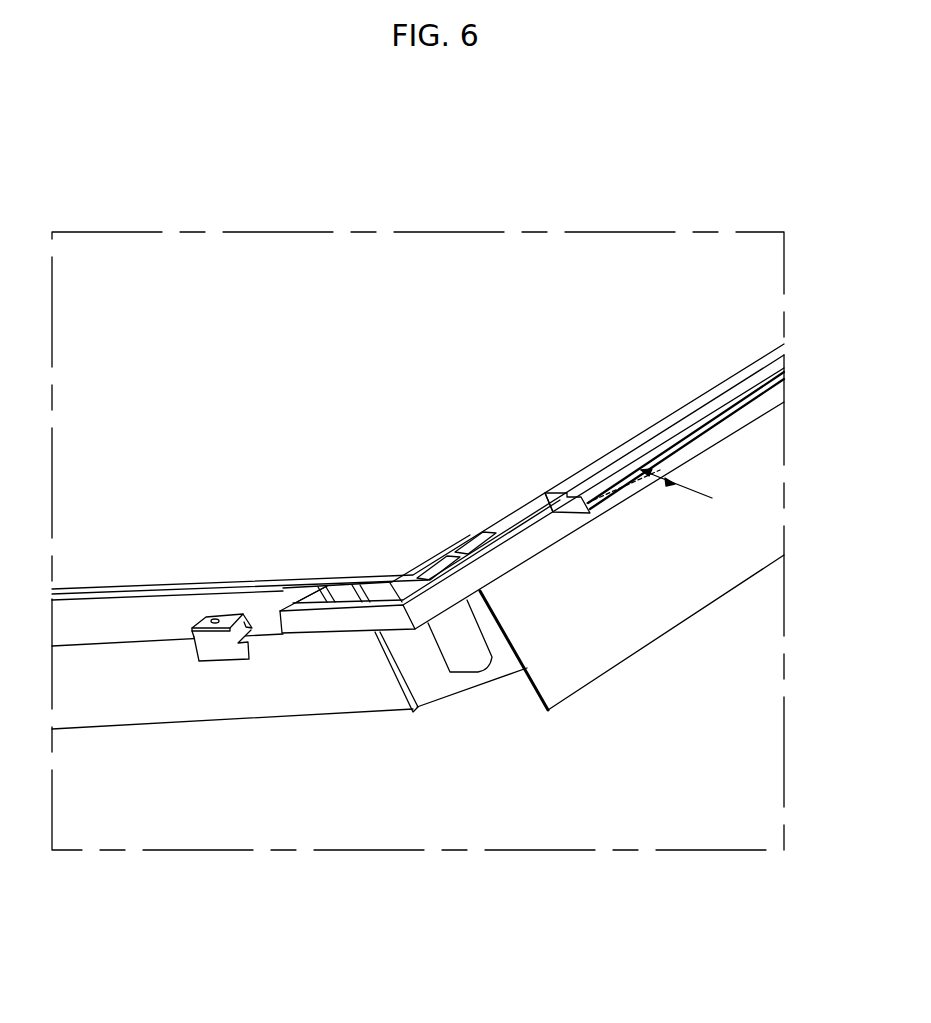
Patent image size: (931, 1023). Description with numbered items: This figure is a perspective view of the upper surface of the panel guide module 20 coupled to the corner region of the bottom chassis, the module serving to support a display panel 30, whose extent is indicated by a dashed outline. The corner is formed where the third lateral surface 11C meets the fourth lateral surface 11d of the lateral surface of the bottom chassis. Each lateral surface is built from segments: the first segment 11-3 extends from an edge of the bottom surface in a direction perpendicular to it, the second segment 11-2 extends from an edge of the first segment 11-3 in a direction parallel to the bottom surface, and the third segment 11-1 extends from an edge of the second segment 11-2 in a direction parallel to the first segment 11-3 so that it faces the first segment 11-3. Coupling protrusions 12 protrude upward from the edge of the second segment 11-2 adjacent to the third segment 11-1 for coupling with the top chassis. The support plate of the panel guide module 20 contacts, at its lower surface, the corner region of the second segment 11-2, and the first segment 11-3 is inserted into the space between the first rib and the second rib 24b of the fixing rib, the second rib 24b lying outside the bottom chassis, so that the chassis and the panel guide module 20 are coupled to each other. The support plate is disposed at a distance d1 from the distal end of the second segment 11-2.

The display panel 30 is at (547, 268).
The panel guide module 20 is at (400, 566).
The third segment 11-1 is at (580, 652).
The second segment 11-2 is at (113, 607).
The first segment 11-3 is at (408, 662).
The third lateral surface 11C is at (120, 690).
The fourth lateral surface 11d is at (700, 445).
The coupling protrusion 12 is at (205, 617).
The second rib 24b is at (458, 657).
The distance d1 is at (650, 483).